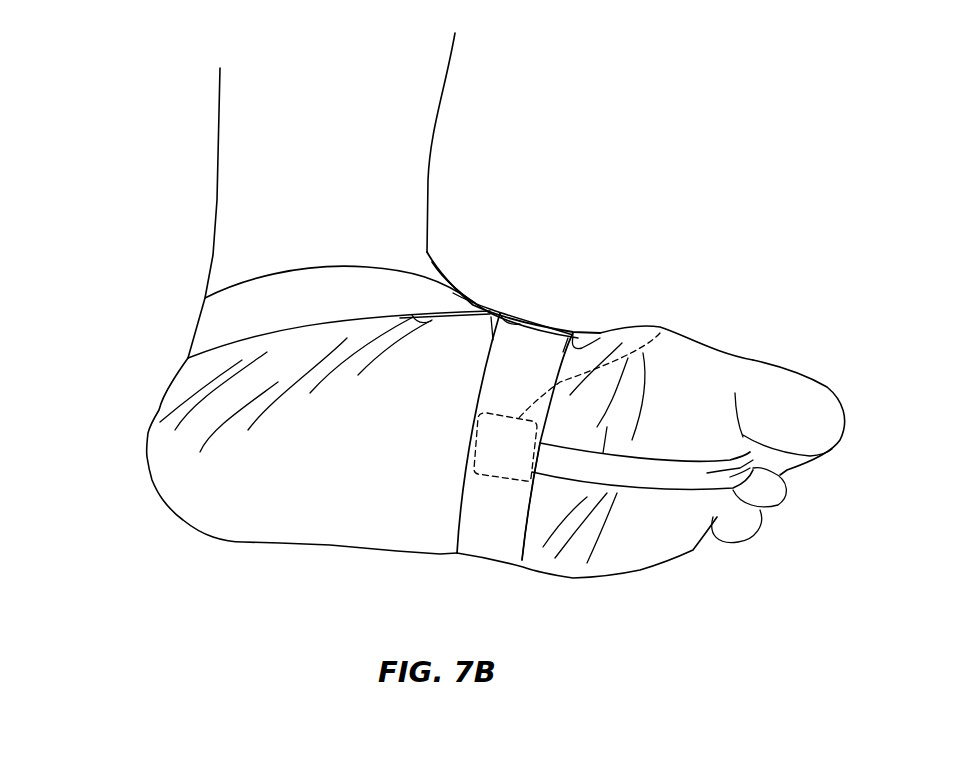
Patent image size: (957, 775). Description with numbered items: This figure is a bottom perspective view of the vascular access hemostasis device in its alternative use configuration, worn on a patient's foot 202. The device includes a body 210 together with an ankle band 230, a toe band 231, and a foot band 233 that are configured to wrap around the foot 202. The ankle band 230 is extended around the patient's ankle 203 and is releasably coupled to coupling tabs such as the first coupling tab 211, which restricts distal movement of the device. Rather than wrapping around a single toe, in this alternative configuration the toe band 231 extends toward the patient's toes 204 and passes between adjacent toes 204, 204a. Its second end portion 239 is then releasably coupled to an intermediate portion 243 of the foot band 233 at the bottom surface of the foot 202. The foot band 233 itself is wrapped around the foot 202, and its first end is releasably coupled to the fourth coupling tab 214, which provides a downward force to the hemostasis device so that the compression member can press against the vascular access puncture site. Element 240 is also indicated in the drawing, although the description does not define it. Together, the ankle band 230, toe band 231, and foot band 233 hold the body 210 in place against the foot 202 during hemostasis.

The foot 202 is at (323, 515).
The ankle 203 is at (227, 215).
The toe 204 is at (800, 463).
The adjacent toe 204a is at (782, 497).
The body 210 is at (501, 312).
The first coupling tab 211 is at (452, 322).
The fourth coupling tab 214 is at (593, 348).
The ankle band 230 is at (413, 290).
The toe band 231 is at (675, 467).
The foot band 233 is at (541, 341).
The second end portion 239 is at (660, 333).
The bottom strap portion 240 is at (647, 486).
The intermediate portion 243 is at (527, 527).